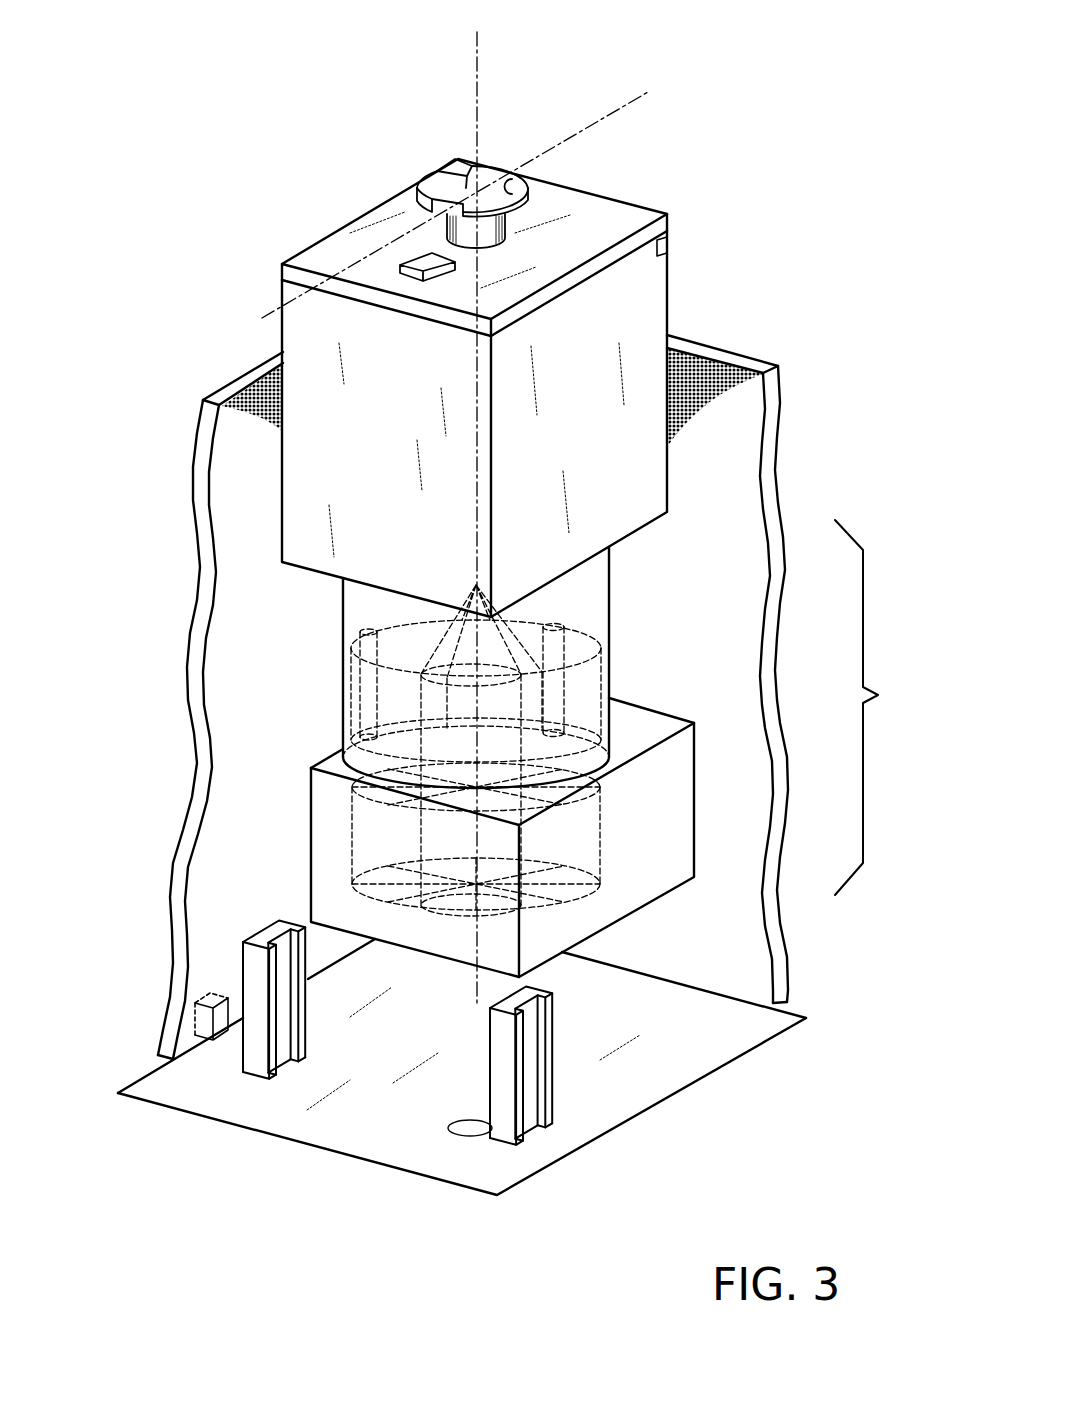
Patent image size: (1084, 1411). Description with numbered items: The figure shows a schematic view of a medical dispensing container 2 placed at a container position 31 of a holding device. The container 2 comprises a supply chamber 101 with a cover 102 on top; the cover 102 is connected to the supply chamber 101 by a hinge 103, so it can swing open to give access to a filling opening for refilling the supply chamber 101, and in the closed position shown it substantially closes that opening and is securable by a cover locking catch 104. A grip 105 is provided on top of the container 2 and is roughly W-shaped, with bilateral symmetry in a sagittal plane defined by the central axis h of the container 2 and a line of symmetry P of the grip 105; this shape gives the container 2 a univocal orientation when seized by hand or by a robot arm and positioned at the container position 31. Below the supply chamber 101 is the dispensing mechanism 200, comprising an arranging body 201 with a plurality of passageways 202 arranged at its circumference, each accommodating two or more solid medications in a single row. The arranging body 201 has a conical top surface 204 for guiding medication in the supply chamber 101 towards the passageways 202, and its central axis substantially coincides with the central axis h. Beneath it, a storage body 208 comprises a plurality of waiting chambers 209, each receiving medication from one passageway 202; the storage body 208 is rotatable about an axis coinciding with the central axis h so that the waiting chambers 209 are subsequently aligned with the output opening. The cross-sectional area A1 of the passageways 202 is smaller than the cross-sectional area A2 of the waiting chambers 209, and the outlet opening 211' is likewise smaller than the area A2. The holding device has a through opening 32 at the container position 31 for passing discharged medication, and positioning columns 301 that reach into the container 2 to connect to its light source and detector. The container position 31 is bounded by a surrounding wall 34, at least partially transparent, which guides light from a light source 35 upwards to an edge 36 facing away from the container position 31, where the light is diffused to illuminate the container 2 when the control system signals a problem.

The medical dispensing container 2 is at (634, 169).
The supply chamber 101 is at (660, 302).
The cover 102 is at (332, 248).
The hinge 103 is at (662, 246).
The cover locking catch 104 is at (418, 274).
The grip 105 is at (520, 178).
The dispensing mechanism 200 is at (883, 707).
The arranging body 201 is at (590, 688).
The passageways 202 is at (370, 681).
The conical top surface 204 is at (410, 630).
The storage body 208 is at (325, 803).
The waiting chambers 209 is at (386, 843).
The outlet opening 211' is at (466, 842).
The container position 31 is at (645, 1085).
The through opening 32 is at (472, 1132).
The surrounding wall 34 is at (757, 413).
The light source 35 is at (220, 1024).
The edge 36 is at (222, 393).
The positioning columns 301 is at (247, 1050).
The cross-sectional area of the passageways A1 is at (342, 725).
The cross-sectional area of the waiting chambers A2 is at (400, 893).
The central axis h is at (486, 506).
The line of symmetry P is at (455, 199).